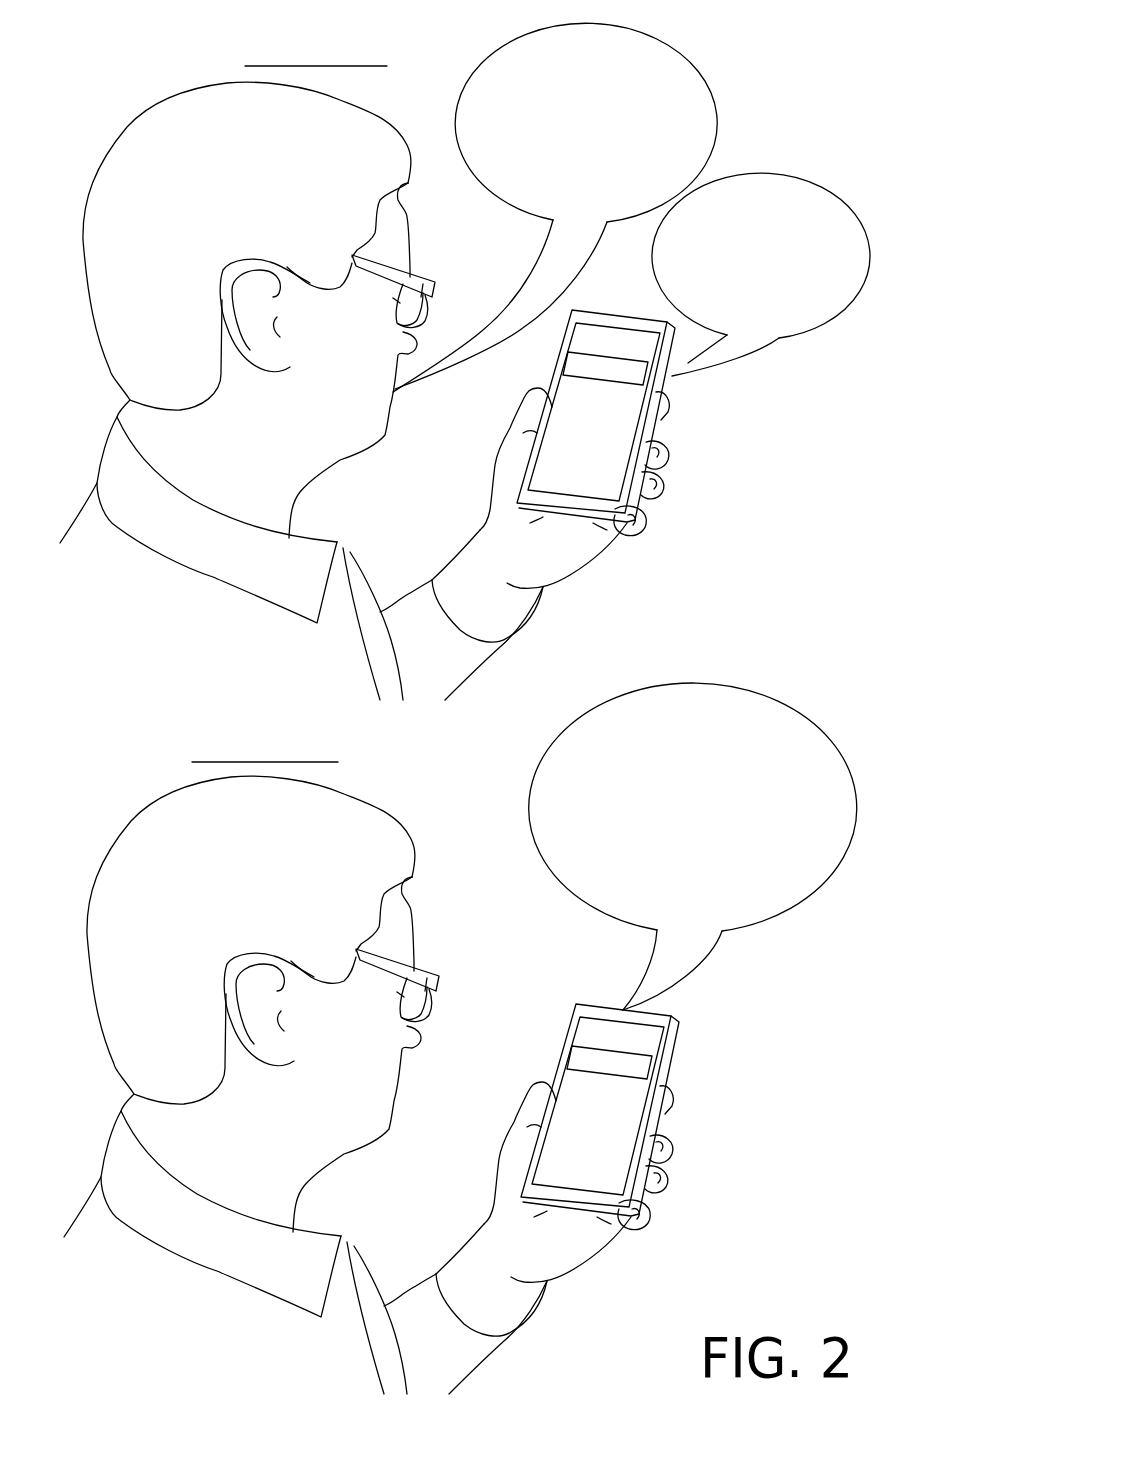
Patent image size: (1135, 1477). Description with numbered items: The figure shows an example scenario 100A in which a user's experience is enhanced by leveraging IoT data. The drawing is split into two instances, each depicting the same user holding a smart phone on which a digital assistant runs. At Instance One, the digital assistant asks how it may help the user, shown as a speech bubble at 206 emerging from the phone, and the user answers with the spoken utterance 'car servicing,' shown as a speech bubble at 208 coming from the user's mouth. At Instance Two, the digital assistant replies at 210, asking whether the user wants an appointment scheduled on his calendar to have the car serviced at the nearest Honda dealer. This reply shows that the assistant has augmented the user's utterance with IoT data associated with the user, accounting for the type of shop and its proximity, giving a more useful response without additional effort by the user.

The scenario 100A is at (784, 40).
The digital assistant question 206 is at (803, 180).
The user response 208 is at (703, 81).
The digital assistant response 210 is at (767, 697).